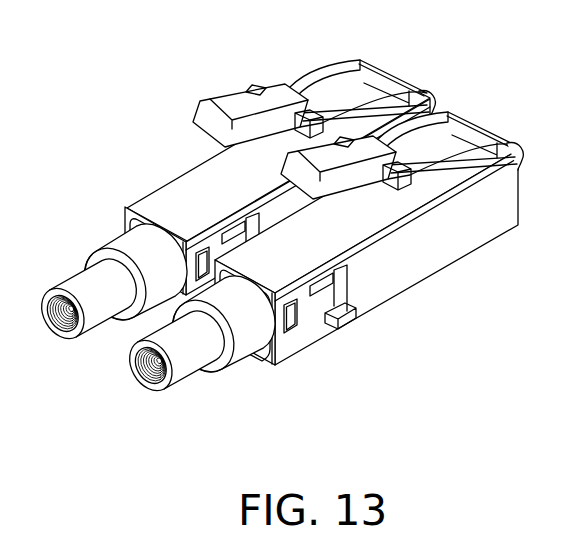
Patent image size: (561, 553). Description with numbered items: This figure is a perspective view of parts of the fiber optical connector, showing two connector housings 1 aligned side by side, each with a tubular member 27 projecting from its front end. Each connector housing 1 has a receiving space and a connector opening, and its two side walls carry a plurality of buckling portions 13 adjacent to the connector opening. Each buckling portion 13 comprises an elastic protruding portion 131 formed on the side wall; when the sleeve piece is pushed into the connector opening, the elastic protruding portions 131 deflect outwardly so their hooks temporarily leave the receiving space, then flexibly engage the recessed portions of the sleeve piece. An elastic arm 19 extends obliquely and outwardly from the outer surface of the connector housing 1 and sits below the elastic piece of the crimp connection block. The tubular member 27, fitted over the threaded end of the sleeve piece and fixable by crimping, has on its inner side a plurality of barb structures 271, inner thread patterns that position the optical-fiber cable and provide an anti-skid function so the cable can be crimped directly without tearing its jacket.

The connector housing 1 is at (369, 275).
The buckling portion 13 is at (331, 352).
The elastic protruding portion 131 is at (320, 298).
The elastic arm 19 is at (268, 106).
The tubular member 27 is at (238, 350).
The barb structure 271 is at (70, 338).